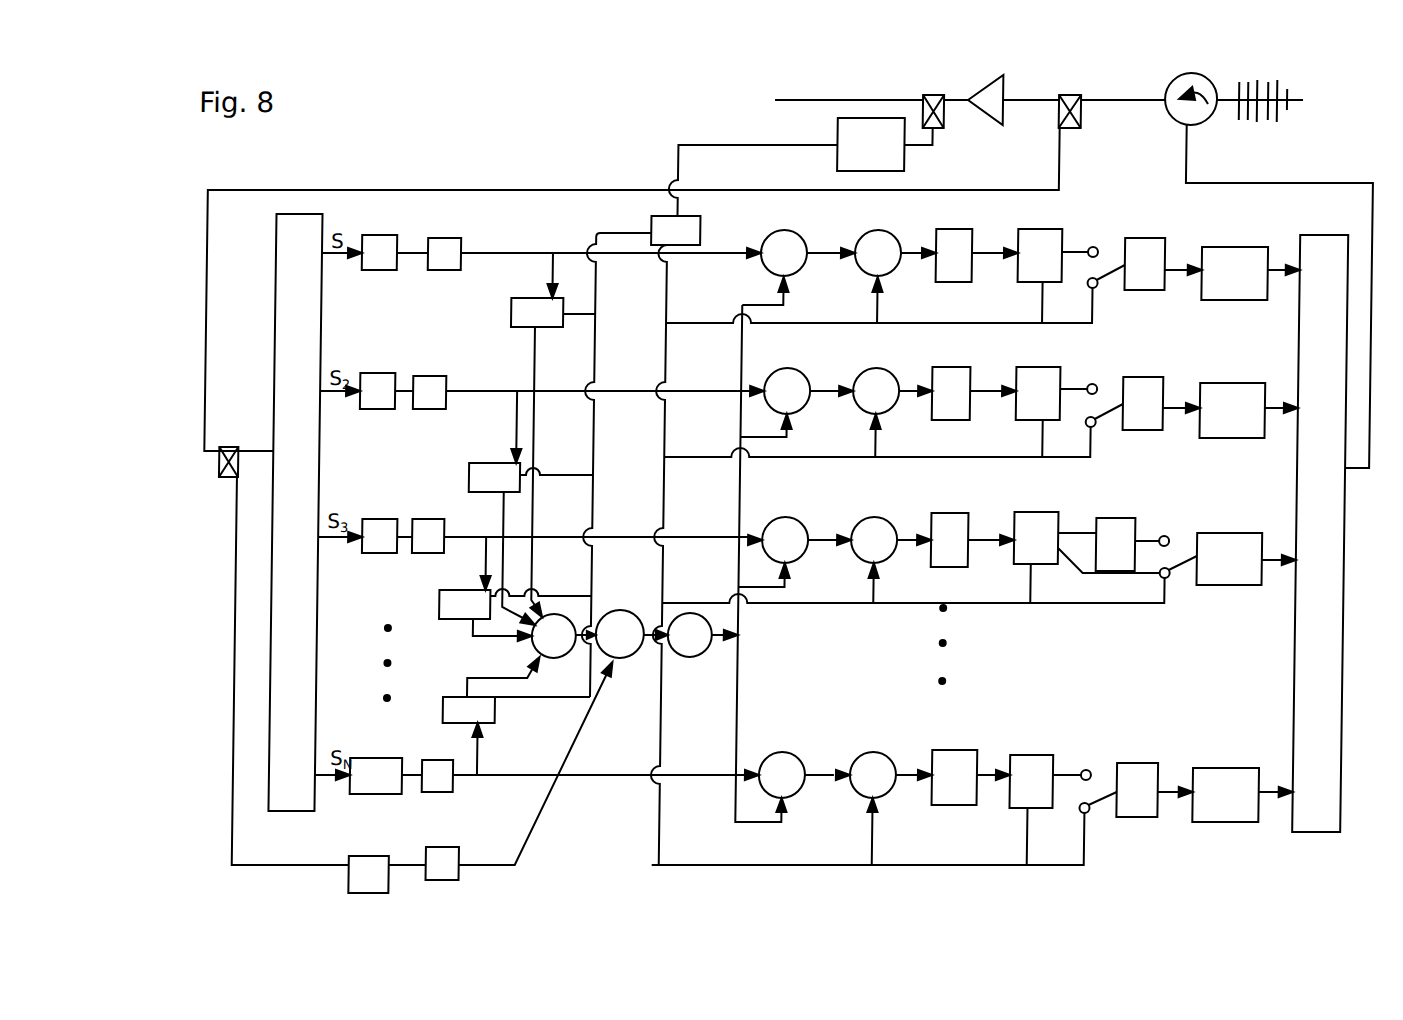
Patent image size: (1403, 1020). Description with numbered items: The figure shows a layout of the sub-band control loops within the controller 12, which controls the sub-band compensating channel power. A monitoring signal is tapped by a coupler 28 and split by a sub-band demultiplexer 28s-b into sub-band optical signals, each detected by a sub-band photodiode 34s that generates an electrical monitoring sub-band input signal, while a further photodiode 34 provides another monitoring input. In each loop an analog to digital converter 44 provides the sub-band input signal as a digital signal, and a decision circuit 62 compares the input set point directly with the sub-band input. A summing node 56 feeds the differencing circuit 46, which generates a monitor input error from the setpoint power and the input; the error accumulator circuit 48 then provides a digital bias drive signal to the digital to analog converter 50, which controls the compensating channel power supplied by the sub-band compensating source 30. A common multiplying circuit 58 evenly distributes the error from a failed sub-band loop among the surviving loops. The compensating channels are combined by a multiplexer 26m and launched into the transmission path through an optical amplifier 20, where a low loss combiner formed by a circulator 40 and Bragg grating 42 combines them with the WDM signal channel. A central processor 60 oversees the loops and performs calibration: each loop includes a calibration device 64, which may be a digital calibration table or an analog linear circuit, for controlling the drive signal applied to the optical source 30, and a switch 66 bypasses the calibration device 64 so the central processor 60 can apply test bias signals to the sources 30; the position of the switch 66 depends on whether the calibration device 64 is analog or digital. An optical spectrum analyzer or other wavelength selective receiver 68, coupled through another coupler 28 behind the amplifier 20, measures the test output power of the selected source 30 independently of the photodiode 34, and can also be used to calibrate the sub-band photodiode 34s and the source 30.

The controller 12 is at (1243, 891).
The optical amplifier 20 is at (1001, 124).
The multiplexer 26m is at (1349, 750).
The optical coupler 28 is at (932, 130).
The demultiplexer 28s-b is at (276, 766).
The sub-band compensating source 30 is at (1245, 247).
The photodiode 34 is at (371, 895).
The sub-band photodiode 34s is at (374, 235).
The circulator 40 is at (1208, 112).
The Bragg grating 42 is at (1265, 120).
The analog to digital converter 44 is at (450, 236).
The differencing circuit 46 is at (872, 231).
The error accumulator circuit 48 is at (950, 229).
The digital to analog converter 50 is at (1141, 238).
The summer 56 is at (778, 232).
The common multiplying circuit 58 is at (703, 658).
The central processor 60 is at (651, 226).
The decision circuit 62 is at (512, 311).
The calibration device 64 is at (1041, 229).
The switch 66 is at (1098, 288).
The wavelength selective receiver 68 is at (836, 158).